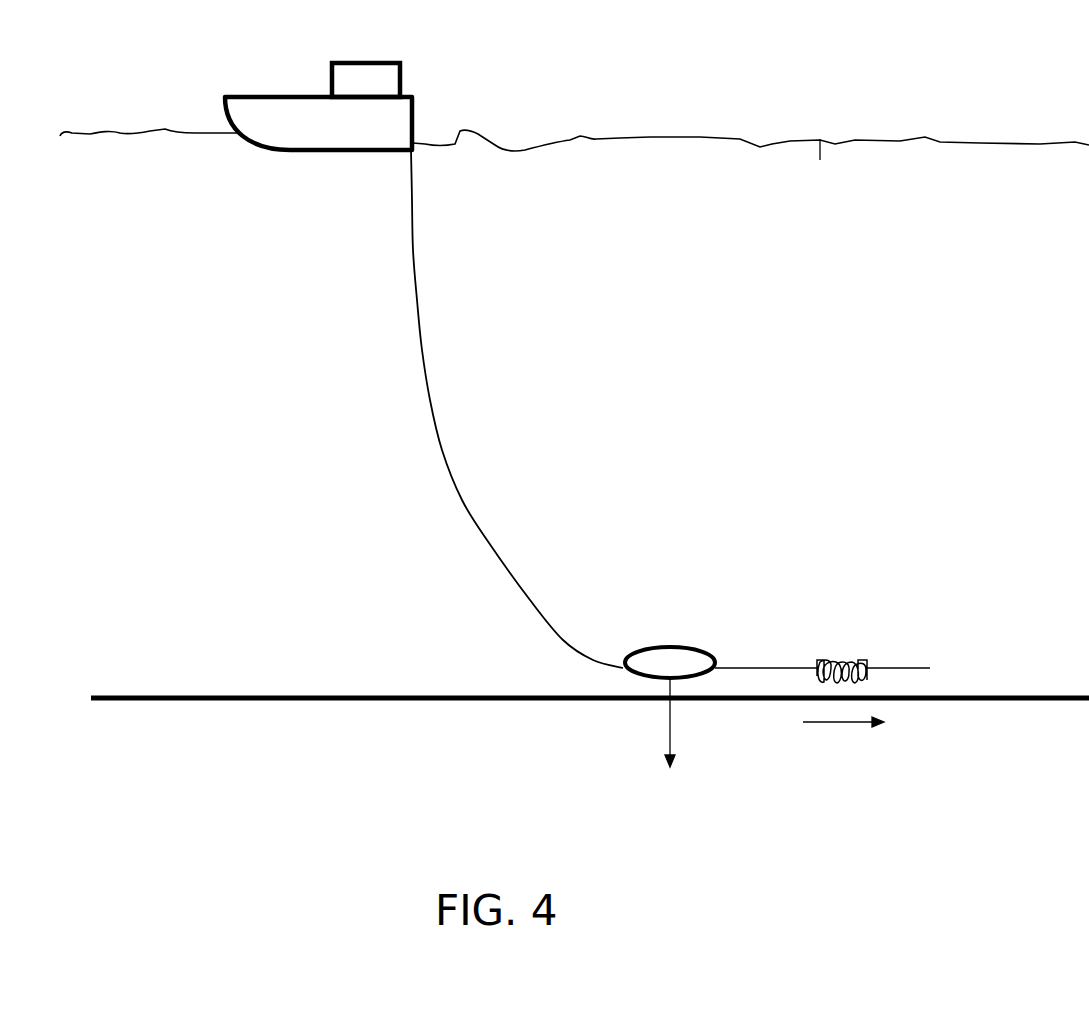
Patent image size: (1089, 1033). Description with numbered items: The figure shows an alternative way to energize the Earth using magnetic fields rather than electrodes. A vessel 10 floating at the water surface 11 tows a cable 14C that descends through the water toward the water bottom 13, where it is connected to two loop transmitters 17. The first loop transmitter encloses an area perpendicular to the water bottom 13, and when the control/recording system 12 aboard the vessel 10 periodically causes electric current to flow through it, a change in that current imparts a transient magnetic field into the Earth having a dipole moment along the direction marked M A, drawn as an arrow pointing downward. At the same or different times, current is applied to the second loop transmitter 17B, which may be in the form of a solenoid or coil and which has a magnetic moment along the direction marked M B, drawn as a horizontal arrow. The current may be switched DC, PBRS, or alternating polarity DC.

The vessel 10 is at (270, 108).
The water surface 11 is at (707, 140).
The control/recording system 12 is at (374, 70).
The water bottom 13 is at (923, 697).
The cable 14C is at (432, 397).
The seismic node 17 is at (665, 645).
The second loop transmitter 17B is at (832, 667).